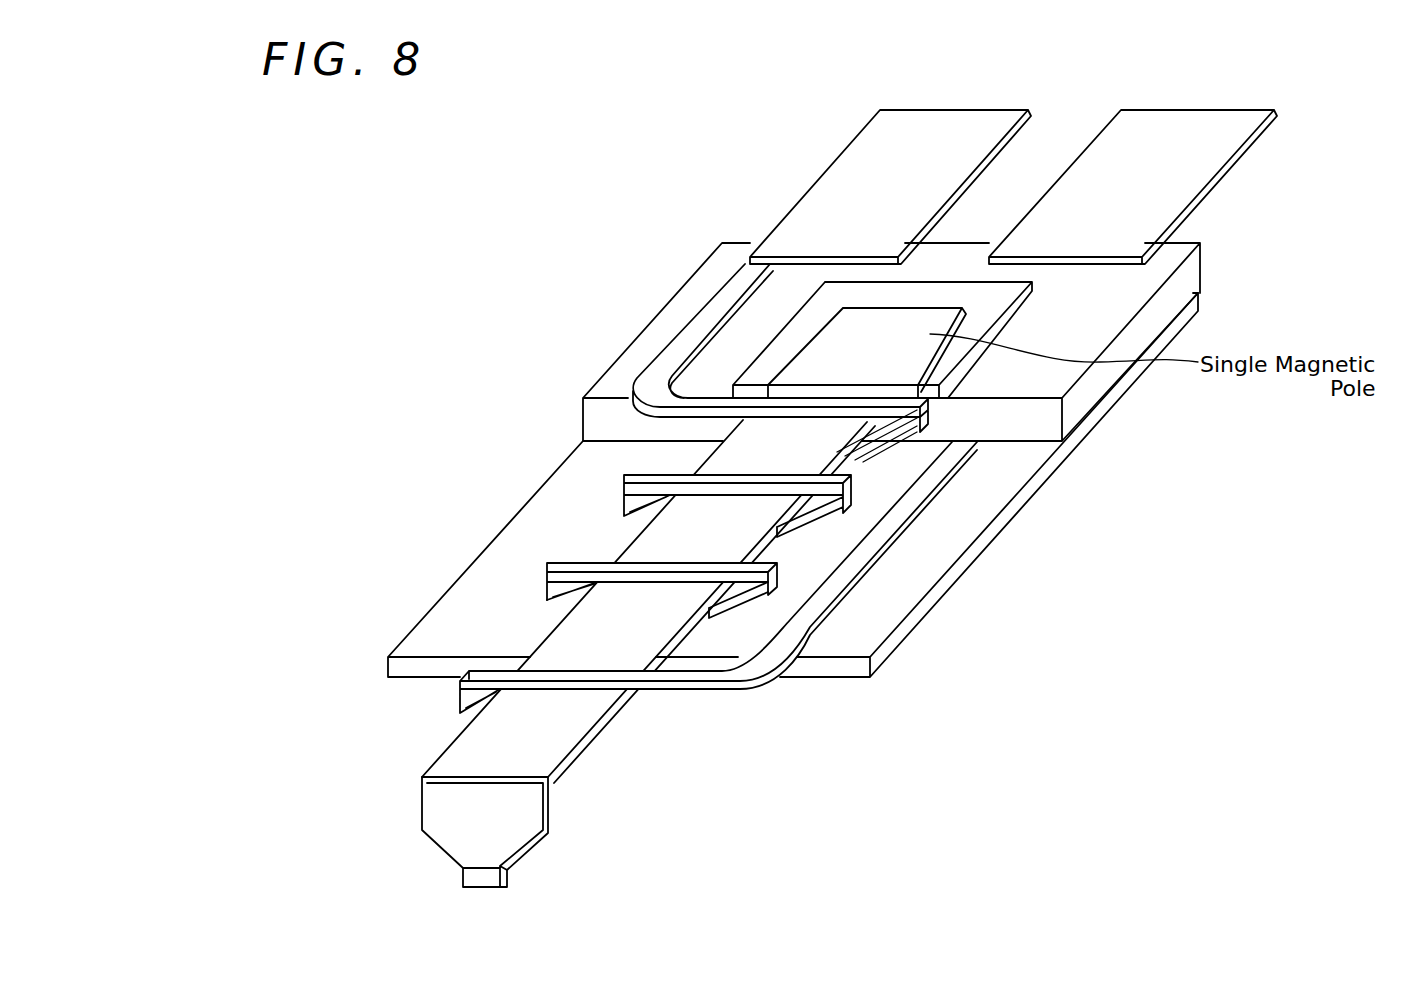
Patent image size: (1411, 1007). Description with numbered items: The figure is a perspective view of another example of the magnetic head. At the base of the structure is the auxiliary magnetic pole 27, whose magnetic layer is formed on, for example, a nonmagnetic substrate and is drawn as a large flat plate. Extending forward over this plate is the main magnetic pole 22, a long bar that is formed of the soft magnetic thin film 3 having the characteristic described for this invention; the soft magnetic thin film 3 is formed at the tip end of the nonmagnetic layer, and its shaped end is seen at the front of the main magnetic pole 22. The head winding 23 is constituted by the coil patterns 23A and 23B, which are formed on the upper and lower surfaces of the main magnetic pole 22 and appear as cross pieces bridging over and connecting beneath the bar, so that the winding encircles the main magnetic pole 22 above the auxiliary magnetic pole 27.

The soft magnetic thin film 3 is at (533, 808).
The main magnetic pole 22 is at (574, 733).
The head winding 23 is at (766, 577).
The coil pattern 23A is at (772, 607).
The coil pattern 23B is at (778, 571).
The auxiliary magnetic pole 27 is at (1010, 518).